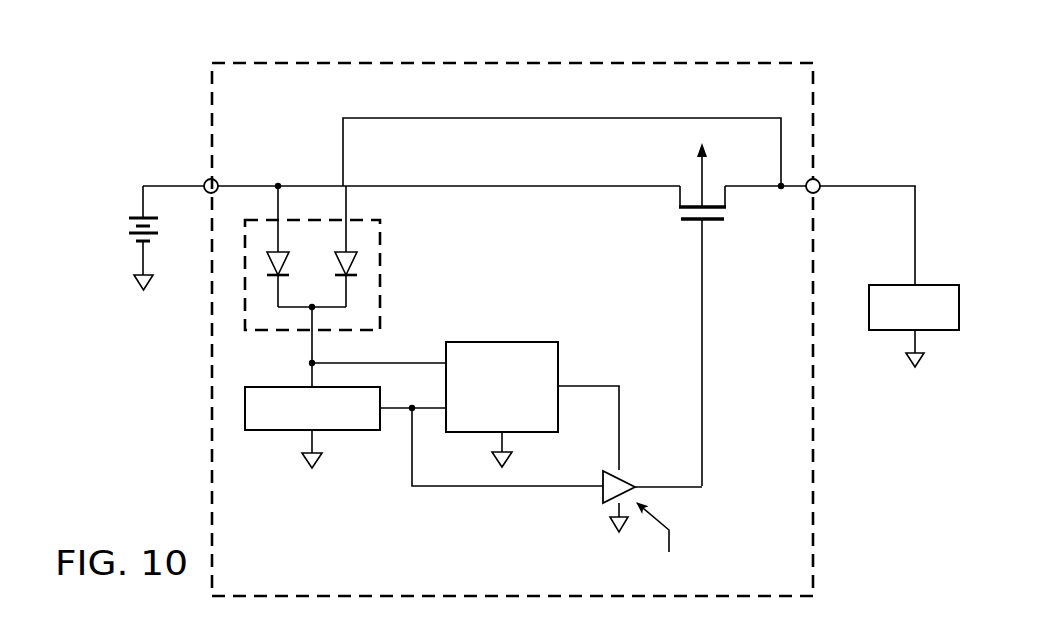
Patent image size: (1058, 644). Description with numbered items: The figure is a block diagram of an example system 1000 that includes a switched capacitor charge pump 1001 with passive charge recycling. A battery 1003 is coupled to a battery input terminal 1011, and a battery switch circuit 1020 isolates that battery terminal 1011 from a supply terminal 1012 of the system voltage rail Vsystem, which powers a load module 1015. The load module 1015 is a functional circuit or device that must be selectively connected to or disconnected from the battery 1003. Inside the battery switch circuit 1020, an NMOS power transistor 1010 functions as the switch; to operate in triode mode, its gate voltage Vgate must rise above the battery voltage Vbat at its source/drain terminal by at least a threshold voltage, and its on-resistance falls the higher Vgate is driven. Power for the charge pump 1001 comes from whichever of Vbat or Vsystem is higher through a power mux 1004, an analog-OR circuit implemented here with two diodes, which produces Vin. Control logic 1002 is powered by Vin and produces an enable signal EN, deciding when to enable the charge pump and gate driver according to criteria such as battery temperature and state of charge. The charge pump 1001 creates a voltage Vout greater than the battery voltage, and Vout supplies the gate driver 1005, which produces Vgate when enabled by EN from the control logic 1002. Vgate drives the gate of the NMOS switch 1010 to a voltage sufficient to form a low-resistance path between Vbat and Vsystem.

The system 1000 is at (133, 95).
The switched capacitor charge pump 1001 is at (512, 340).
The control logic 1002 is at (280, 432).
The battery 1003 is at (128, 228).
The power mux 1004 is at (382, 275).
The gate driver 1005 is at (657, 458).
The NMOS power transistor 1010 is at (693, 223).
The battery input terminal 1011 is at (253, 163).
The supply terminal 1012 is at (820, 192).
The load module 1015 is at (892, 332).
The battery switch circuit 1020 is at (815, 120).